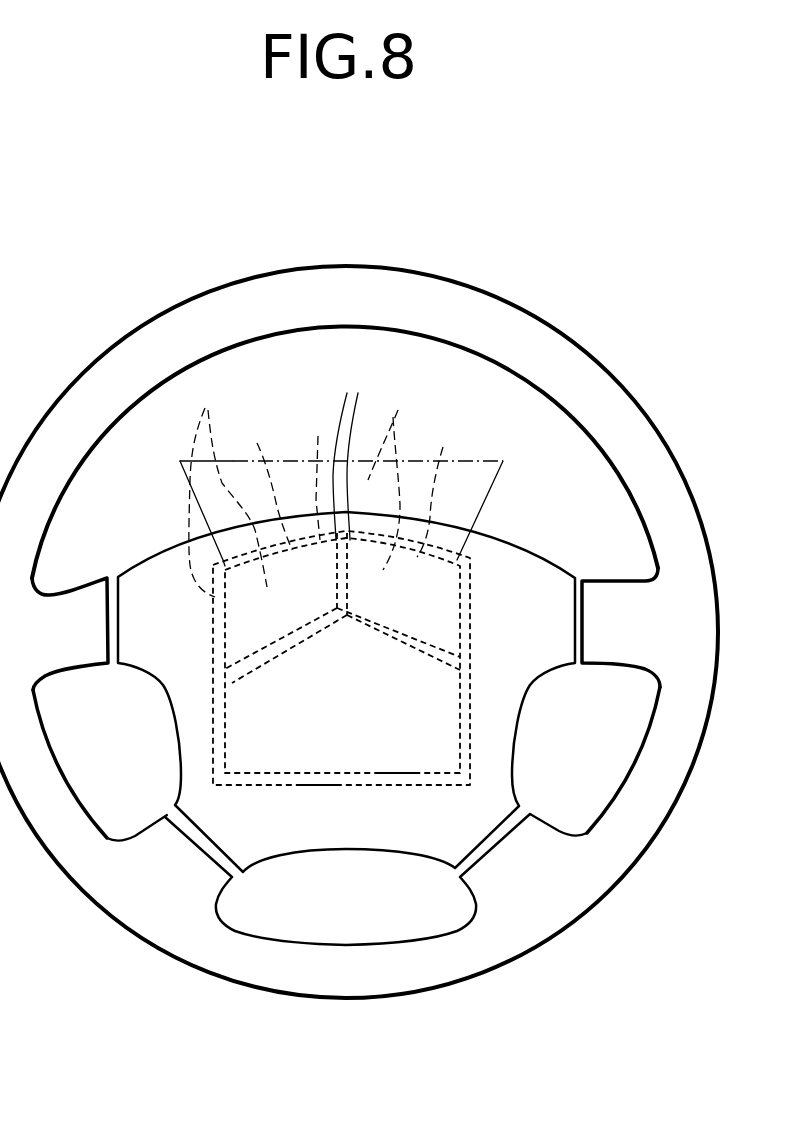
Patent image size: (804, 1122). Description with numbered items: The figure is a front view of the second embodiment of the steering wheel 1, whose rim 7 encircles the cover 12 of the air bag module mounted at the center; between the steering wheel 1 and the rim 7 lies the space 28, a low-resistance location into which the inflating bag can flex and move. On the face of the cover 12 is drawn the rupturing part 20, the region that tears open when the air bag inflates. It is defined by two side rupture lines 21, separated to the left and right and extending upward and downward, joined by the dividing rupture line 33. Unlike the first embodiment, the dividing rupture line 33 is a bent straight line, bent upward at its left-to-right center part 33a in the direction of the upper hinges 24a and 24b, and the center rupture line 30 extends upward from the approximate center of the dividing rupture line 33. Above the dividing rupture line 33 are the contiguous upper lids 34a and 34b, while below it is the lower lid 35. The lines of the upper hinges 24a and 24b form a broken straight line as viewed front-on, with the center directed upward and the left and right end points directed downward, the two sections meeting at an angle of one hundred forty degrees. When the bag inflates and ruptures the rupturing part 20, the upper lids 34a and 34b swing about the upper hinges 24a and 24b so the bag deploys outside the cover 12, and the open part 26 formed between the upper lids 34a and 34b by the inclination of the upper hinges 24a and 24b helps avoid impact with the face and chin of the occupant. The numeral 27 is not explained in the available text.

The steering wheel 1 is at (561, 298).
The rim 7 is at (443, 293).
The cover 12 is at (514, 541).
The rupturing part 20 is at (480, 629).
The side rupture lines 21 is at (478, 583).
The upper hinge 24a is at (261, 479).
The upper hinge 24b is at (447, 477).
The open part 26 is at (345, 446).
The bag holder 27 is at (331, 785).
The space 28 is at (290, 377).
The center rupture line 30 is at (317, 469).
The dividing rupture line 33 is at (430, 650).
The center part 33a is at (273, 645).
The upper lid 34a is at (222, 484).
The upper lid 34b is at (402, 468).
The lower lid 35 is at (402, 750).